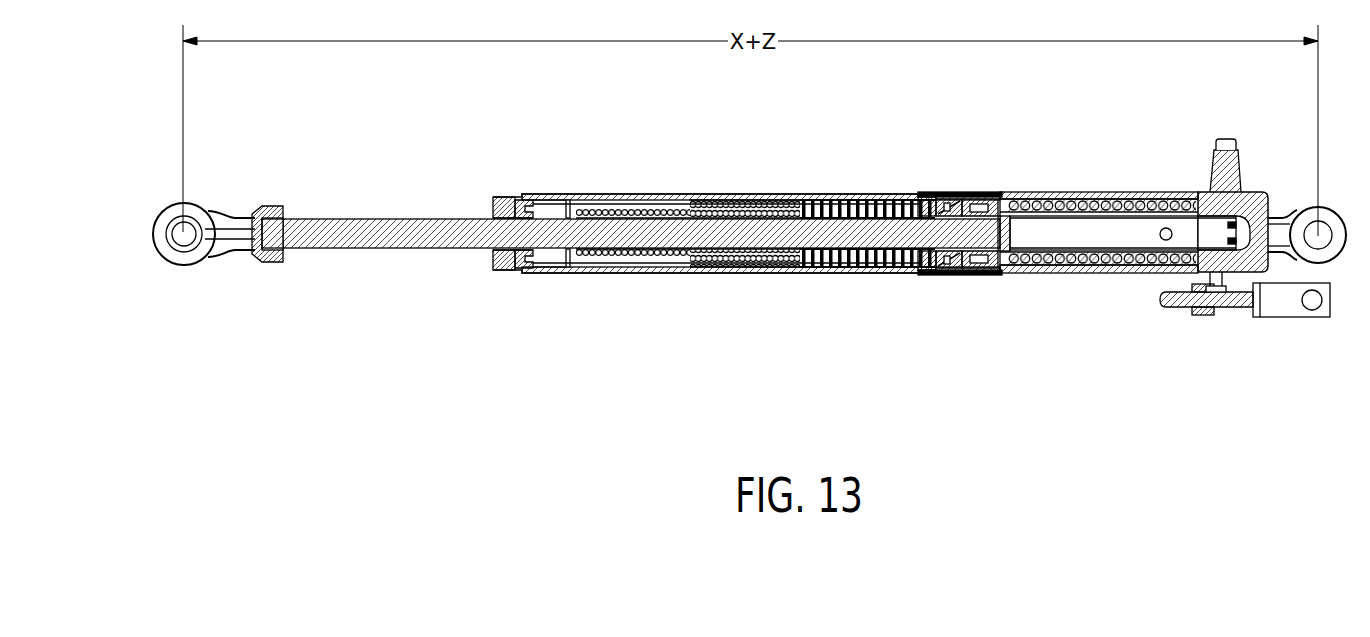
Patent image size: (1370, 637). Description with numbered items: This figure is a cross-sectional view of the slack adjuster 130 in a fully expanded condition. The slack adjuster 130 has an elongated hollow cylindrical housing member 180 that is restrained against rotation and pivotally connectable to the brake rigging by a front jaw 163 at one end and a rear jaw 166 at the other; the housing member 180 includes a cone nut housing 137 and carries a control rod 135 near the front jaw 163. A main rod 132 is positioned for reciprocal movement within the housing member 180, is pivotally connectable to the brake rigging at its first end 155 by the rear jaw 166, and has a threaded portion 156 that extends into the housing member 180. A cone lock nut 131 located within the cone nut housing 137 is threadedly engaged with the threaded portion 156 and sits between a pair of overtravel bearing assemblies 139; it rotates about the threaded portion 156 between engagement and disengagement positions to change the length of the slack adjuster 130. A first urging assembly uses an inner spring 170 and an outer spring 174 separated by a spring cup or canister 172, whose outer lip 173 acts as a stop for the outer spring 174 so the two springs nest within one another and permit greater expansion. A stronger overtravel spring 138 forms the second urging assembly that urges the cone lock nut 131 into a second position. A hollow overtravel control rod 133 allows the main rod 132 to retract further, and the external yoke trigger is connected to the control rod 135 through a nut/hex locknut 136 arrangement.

The slack adjuster 130 is at (422, 152).
The rear jaw 166 is at (177, 203).
The first end 155 is at (318, 226).
The threaded portion 156 is at (905, 232).
The main rod 132 is at (472, 226).
The housing member 180 is at (565, 195).
The inner spring 170 is at (623, 256).
The outer lip 173 is at (665, 259).
The outer spring 174 is at (712, 266).
The spring cup or canister 172 is at (757, 269).
The cone nut housing 137 is at (957, 197).
The cone lock nut 131 is at (960, 275).
The overtravel bearing assemblies 139 is at (992, 274).
The overtravel control rod 133 is at (1092, 244).
The overtravel spring 138 is at (1063, 197).
The front jaw 163 is at (1322, 206).
The nut/hex locknut 136 is at (1188, 311).
The control rod 135 is at (1283, 291).